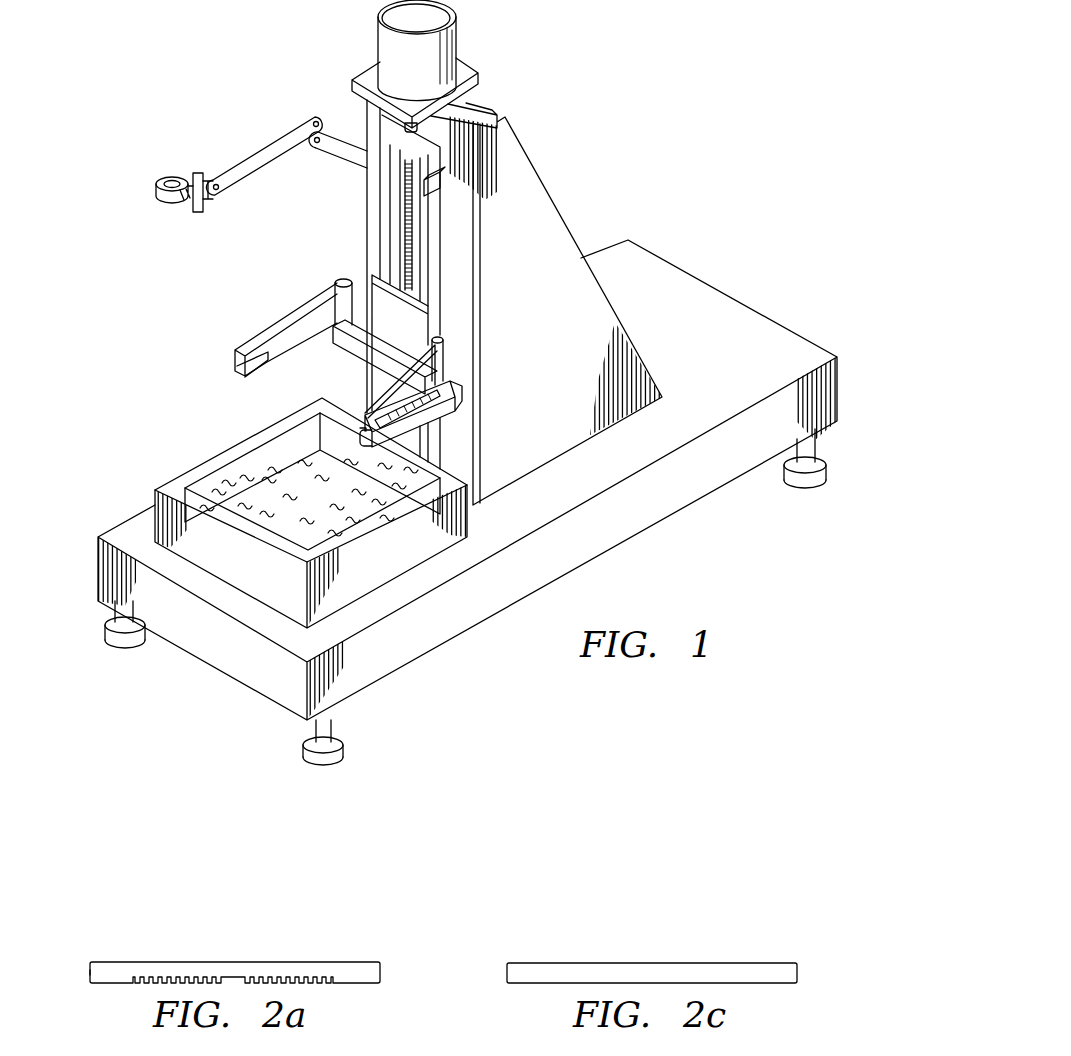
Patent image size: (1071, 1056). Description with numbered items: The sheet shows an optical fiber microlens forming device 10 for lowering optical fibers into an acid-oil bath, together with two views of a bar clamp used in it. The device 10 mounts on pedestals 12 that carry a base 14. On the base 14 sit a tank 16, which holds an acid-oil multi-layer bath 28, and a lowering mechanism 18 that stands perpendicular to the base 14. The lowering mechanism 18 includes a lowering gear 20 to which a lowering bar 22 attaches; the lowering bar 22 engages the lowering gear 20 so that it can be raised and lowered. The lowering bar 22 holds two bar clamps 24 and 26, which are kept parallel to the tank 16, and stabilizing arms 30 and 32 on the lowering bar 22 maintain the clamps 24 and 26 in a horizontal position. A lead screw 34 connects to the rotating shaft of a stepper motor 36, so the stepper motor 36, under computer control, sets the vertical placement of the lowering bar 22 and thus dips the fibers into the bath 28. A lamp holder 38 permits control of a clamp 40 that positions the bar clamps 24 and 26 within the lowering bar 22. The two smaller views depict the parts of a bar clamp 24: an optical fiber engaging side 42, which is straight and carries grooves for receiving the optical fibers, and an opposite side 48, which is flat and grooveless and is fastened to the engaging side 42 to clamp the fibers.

In FIG. 1, the optical fiber microlens forming device 10 is at (637, 103).
In FIG. 1, the pedestals 12 is at (334, 718).
In FIG. 1, the base 14 is at (607, 540).
In FIG. 1, the tank 16 is at (157, 496).
In FIG. 1, the lowering mechanism 18 is at (593, 292).
In FIG. 1, the lowering gear 20 is at (437, 217).
In FIG. 1, the lowering bar 22 is at (457, 396).
In FIG. 1, the bar clamp 24 is at (263, 360).
In FIG. 2A, the bar clamp 24 is at (351, 952).
In FIG. 1, the bar clamp 26 is at (363, 431).
In FIG. 1, the acid-oil multi-layer bath 28 is at (322, 501).
In FIG. 1, the stabilizing arm 30 is at (303, 334).
In FIG. 1, the stabilizing arm 32 is at (428, 358).
In FIG. 1, the lead screw 34 is at (404, 197).
In FIG. 1, the stepper motor 36 is at (455, 38).
In FIG. 1, the lamp holder 38 is at (240, 188).
In FIG. 1, the clamp 40 is at (166, 178).
In FIG. 2A, the optical fiber engaging side 42 is at (88, 969).
In FIG. 2C, the opposite side 48 is at (800, 970).